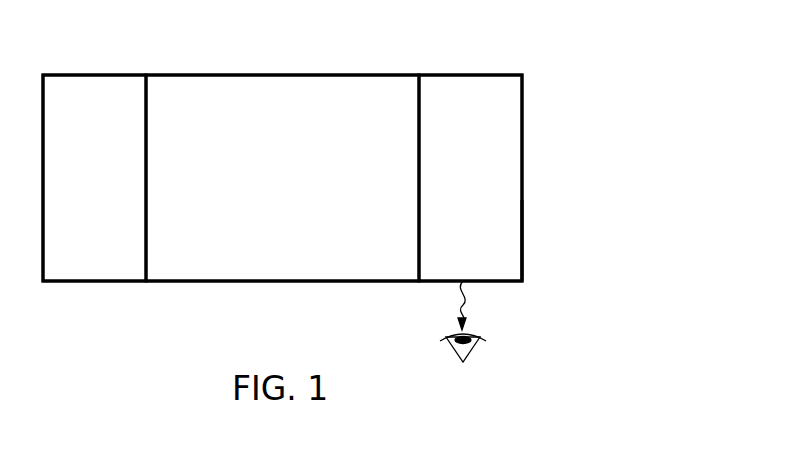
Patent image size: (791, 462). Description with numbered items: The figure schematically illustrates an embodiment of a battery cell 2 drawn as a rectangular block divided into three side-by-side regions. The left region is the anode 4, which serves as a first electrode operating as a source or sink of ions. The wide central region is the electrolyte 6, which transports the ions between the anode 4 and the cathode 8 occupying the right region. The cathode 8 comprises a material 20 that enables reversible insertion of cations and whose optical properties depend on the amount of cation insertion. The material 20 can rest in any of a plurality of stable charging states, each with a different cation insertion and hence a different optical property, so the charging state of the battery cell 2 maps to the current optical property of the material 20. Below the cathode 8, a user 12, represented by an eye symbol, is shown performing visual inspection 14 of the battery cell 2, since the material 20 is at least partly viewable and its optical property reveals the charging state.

The battery cell 2 is at (620, 70).
The anode 4 is at (90, 75).
The electrolyte 6 is at (292, 75).
The cathode 8 is at (460, 75).
The user 12 is at (480, 347).
The visual inspection 14 is at (478, 306).
The material 20 is at (500, 260).